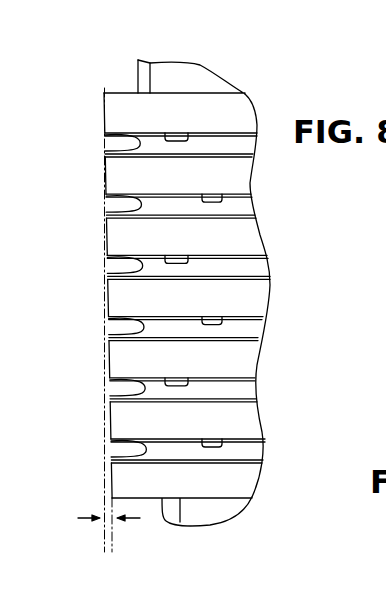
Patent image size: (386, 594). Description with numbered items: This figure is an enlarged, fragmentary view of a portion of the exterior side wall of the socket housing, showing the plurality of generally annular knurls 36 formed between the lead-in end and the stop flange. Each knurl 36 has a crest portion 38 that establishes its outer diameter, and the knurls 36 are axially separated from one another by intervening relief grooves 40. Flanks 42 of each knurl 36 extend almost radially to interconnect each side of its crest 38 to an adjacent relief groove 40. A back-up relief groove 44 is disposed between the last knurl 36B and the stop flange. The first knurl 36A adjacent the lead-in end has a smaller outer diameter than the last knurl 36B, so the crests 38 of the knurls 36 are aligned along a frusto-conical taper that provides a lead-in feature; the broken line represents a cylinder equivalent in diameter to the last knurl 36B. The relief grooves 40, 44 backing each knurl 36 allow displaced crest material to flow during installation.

The knurl 36 is at (105, 151).
The first knurl 36A is at (111, 457).
The last knurl 36B is at (104, 93).
The crest portion 38 is at (115, 112).
The relief groove 40 is at (134, 136).
The flank 42 is at (195, 156).
The back-up relief groove 44 is at (137, 80).